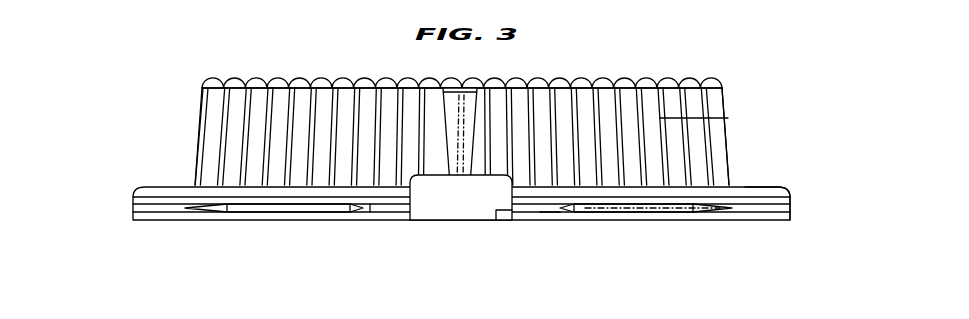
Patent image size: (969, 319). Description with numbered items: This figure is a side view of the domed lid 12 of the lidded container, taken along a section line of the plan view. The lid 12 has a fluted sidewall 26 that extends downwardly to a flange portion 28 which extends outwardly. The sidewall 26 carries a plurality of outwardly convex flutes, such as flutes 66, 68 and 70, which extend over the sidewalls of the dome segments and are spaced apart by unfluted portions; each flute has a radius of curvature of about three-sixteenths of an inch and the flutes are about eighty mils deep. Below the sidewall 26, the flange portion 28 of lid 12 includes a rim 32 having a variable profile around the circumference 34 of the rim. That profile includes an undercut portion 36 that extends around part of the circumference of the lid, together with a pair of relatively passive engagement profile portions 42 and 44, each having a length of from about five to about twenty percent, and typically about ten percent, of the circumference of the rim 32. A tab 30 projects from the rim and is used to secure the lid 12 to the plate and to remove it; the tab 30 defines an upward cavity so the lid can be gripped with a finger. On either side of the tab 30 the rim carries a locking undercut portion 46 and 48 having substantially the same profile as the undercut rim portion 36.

The domed lid 12 is at (232, 78).
The sidewall 26 is at (198, 130).
The flange portion 28 is at (772, 187).
The tab 30 is at (445, 207).
The rim 32 is at (150, 227).
The circumference 34 is at (798, 207).
The undercut portion 36 is at (133, 212).
The passive engagement profile portion 42 is at (265, 220).
The passive engagement profile portion 44 is at (630, 212).
The locking undercut portion 46 is at (372, 220).
The locking undercut portion 48 is at (540, 212).
The flute 66 is at (724, 120).
The flute 68 is at (693, 130).
The flute 70 is at (677, 132).